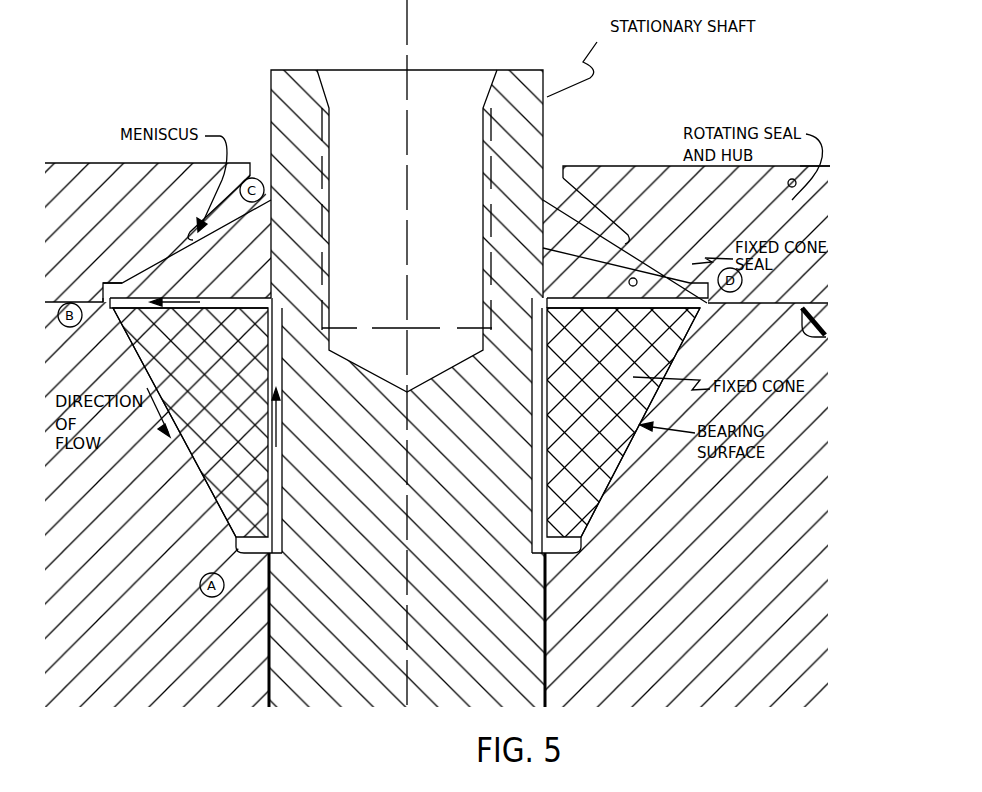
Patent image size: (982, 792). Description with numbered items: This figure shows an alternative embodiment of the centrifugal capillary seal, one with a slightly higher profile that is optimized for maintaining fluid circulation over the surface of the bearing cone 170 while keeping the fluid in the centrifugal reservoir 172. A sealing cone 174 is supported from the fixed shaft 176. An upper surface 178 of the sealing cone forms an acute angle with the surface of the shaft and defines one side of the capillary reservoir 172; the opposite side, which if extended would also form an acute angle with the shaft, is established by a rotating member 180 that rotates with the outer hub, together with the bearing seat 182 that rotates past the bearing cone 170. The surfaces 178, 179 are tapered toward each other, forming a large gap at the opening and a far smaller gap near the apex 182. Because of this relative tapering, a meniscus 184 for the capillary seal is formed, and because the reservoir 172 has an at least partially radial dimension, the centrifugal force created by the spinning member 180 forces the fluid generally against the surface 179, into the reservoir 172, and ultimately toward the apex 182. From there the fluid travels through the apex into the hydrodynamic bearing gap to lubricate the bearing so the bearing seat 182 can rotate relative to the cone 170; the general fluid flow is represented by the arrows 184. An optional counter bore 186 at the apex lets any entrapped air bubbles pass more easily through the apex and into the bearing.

The bearing cone 170 is at (640, 358).
The centrifugal reservoir 172 is at (640, 265).
The sealing cone 174 is at (561, 232).
The fixed shaft 176 is at (447, 80).
The upper surface of the sealing cone 178 is at (583, 232).
The surface of the rotating member 179 is at (690, 245).
The rotating member 180 is at (628, 240).
The bearing seat 182 is at (760, 325).
The meniscus 184 is at (640, 182).
The counter bore 186 is at (104, 284).